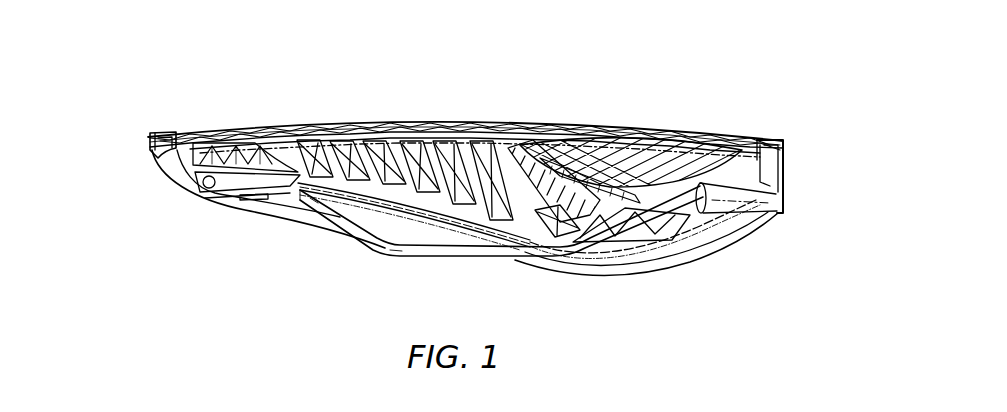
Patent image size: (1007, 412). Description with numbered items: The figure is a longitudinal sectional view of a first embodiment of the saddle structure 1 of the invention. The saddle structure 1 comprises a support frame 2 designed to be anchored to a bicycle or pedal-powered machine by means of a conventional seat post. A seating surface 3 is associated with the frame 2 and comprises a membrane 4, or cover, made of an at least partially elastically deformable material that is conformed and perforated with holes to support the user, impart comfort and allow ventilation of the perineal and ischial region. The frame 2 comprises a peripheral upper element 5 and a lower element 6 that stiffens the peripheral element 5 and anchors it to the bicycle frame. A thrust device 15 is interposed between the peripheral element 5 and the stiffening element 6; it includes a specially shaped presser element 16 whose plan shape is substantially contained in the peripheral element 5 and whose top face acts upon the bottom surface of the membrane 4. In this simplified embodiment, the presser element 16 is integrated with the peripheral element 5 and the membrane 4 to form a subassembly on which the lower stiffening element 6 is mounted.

The saddle structure 1 is at (655, 79).
The support frame 2 is at (218, 219).
The seating surface 3 is at (284, 114).
The membrane 4 is at (437, 123).
The peripheral upper element 5 is at (785, 139).
The lower element 6 is at (387, 247).
The thrust device 15 is at (172, 155).
The presser element 16 is at (686, 225).